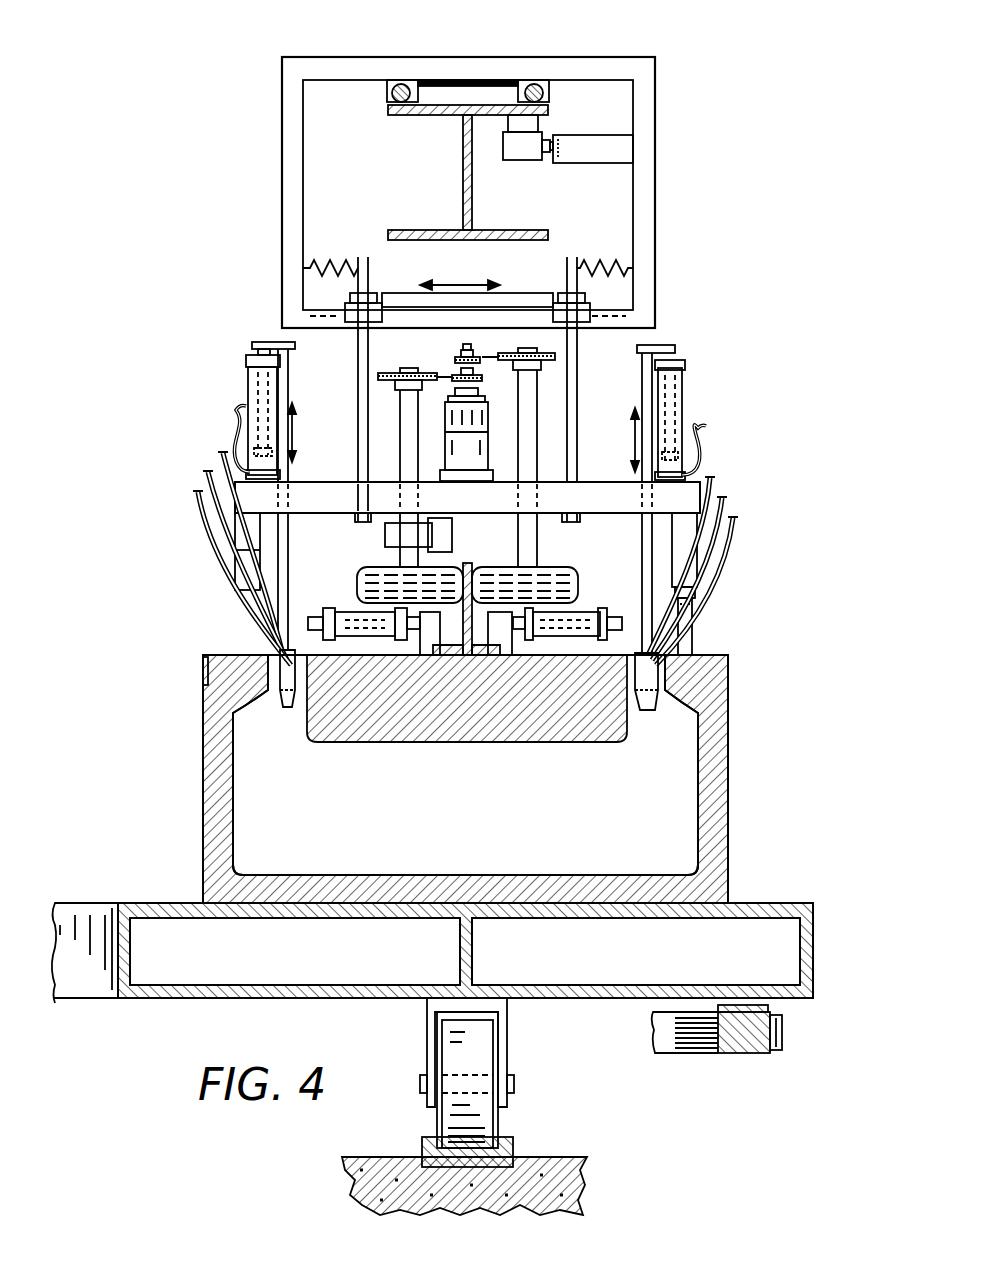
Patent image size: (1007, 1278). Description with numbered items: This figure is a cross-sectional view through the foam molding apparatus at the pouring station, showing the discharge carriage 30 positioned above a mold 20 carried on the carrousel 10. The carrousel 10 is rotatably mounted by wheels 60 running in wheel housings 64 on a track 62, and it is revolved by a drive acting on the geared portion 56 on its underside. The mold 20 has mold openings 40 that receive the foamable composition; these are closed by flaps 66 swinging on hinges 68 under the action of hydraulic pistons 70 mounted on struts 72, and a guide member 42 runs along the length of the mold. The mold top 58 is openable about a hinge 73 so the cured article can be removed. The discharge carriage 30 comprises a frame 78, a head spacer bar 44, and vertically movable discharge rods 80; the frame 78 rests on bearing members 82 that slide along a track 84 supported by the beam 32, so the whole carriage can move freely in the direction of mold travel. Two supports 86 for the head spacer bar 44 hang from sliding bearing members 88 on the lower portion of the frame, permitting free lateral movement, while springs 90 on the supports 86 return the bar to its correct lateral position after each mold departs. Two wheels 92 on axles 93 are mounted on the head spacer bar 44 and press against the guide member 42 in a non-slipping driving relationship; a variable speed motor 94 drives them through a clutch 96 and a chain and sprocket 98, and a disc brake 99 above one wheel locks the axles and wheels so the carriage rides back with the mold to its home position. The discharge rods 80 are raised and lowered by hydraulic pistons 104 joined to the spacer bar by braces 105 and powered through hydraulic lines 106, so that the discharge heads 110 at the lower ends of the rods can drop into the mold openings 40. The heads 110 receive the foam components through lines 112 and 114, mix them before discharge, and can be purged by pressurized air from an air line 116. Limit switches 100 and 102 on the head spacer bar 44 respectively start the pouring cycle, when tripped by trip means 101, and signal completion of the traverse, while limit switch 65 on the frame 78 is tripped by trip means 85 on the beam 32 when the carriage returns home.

The carrousel 10 is at (762, 903).
The mold 20 is at (738, 805).
The discharge carriage 30 is at (690, 277).
The beam 32 is at (463, 137).
The mold openings 40 is at (240, 702).
The guide member 42 is at (467, 655).
The head spacer bar 44 is at (700, 490).
The geared portion 56 is at (748, 1053).
The top 58 is at (245, 655).
The wheels 60 is at (495, 1120).
The track 62 is at (514, 1146).
The wheel housings 64 is at (507, 1030).
The limit switch 65 is at (526, 152).
The flaps 66 is at (335, 612).
The hinges 68 is at (314, 655).
The hydraulic pistons 70 is at (360, 645).
The struts 72 is at (428, 650).
The hinge 73 is at (203, 656).
The frame 78 is at (282, 132).
The discharge rods 80 is at (290, 392).
The bearing members 82 is at (387, 93).
The track 84 is at (404, 84).
The trip means 85 is at (604, 163).
The supports 86 is at (358, 350).
The sliding bearing members 88 is at (406, 278).
The springs 90 is at (340, 268).
The wheels 92 is at (372, 567).
The axles 93 is at (400, 450).
The variable speed motor 94 is at (480, 440).
The clutch 96 is at (485, 408).
The chain and sprocket 98 is at (380, 373).
The disc brake 99 is at (432, 535).
The limit switch 100 is at (697, 562).
The trip means 101 is at (692, 612).
The limit switch 102 is at (248, 576).
The hydraulic pistons 104 is at (252, 376).
The braces 105 is at (262, 342).
The hydraulic lines 106 is at (240, 410).
The discharge heads 110 is at (282, 705).
The line 112 is at (207, 473).
The line 114 is at (198, 494).
The air line 116 is at (222, 455).